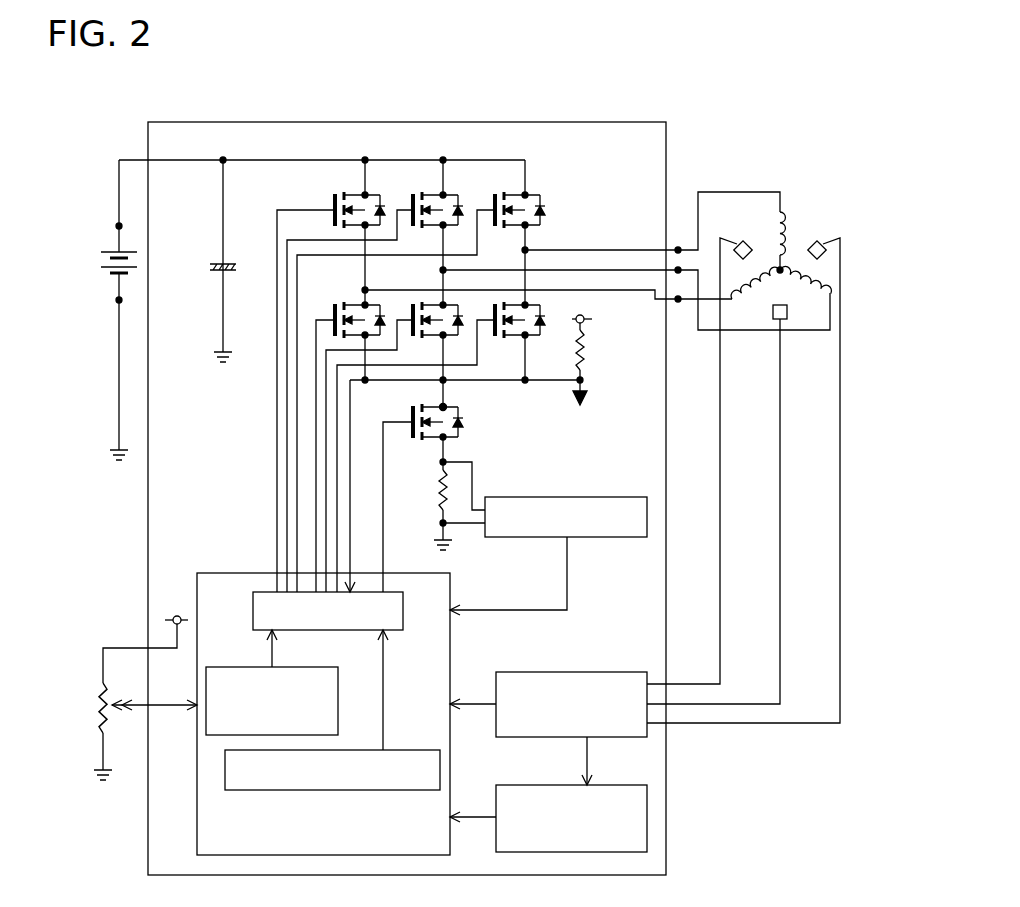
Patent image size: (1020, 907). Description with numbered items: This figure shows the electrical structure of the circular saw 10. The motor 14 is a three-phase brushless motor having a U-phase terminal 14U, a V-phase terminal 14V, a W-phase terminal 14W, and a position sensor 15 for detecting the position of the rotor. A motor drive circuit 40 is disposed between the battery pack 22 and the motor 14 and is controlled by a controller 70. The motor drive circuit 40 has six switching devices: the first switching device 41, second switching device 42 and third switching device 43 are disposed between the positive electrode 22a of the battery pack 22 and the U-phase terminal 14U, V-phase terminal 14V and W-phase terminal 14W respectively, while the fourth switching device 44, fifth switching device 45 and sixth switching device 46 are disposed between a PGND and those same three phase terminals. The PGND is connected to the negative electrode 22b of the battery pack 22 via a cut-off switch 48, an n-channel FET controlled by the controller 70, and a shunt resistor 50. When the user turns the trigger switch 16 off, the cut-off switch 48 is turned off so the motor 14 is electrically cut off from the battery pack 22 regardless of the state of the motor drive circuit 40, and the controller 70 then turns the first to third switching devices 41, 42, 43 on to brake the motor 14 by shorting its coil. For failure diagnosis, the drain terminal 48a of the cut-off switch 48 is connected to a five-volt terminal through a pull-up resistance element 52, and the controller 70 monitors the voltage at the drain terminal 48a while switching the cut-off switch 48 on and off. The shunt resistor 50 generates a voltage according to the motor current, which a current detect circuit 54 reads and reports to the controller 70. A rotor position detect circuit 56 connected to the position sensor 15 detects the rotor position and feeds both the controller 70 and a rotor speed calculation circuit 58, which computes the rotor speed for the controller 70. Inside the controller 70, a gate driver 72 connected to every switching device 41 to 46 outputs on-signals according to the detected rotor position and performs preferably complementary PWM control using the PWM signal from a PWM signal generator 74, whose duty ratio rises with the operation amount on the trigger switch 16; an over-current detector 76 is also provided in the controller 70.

The circular saw 10 is at (725, 65).
The motor 14 is at (597, 263).
The U-phase terminal 14U is at (678, 247).
The V-phase terminal 14V is at (677, 267).
The W-phase terminal 14W is at (678, 302).
The position sensor 15 is at (743, 243).
The trigger switch 16 is at (95, 702).
The battery pack 22 is at (110, 252).
The positive electrode 22a is at (119, 226).
The negative electrode 22b is at (115, 300).
The motor drive circuit 40 is at (447, 358).
The first switching device 41 is at (520, 193).
The second switching device 42 is at (438, 193).
The third switching device 43 is at (360, 193).
The fourth switching device 44 is at (520, 304).
The fifth switching device 45 is at (438, 304).
The sixth switching device 46 is at (360, 304).
The cut-off switch 48 is at (450, 436).
The drain terminal 48a is at (447, 407).
The shunt resistor 50 is at (438, 492).
The resistance element 52 is at (588, 350).
The current detect circuit 54 is at (605, 496).
The rotor position detect circuit 56 is at (607, 671).
The rotor speed calculation circuit 58 is at (647, 817).
The controller 70 is at (297, 711).
The gate driver 72 is at (403, 603).
The PWM signal generator 74 is at (236, 666).
The over-current detector 76 is at (405, 749).